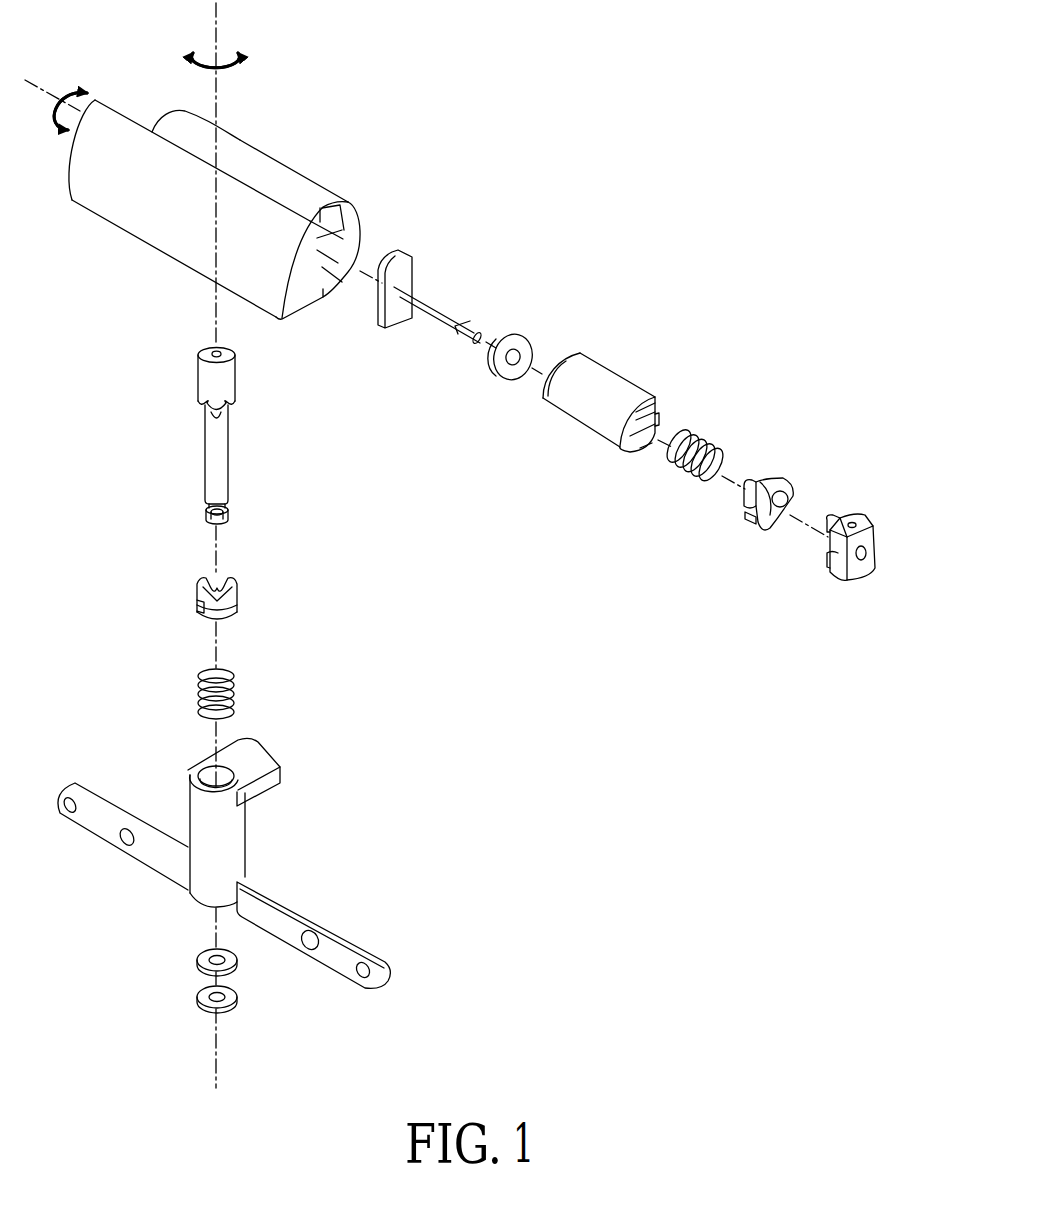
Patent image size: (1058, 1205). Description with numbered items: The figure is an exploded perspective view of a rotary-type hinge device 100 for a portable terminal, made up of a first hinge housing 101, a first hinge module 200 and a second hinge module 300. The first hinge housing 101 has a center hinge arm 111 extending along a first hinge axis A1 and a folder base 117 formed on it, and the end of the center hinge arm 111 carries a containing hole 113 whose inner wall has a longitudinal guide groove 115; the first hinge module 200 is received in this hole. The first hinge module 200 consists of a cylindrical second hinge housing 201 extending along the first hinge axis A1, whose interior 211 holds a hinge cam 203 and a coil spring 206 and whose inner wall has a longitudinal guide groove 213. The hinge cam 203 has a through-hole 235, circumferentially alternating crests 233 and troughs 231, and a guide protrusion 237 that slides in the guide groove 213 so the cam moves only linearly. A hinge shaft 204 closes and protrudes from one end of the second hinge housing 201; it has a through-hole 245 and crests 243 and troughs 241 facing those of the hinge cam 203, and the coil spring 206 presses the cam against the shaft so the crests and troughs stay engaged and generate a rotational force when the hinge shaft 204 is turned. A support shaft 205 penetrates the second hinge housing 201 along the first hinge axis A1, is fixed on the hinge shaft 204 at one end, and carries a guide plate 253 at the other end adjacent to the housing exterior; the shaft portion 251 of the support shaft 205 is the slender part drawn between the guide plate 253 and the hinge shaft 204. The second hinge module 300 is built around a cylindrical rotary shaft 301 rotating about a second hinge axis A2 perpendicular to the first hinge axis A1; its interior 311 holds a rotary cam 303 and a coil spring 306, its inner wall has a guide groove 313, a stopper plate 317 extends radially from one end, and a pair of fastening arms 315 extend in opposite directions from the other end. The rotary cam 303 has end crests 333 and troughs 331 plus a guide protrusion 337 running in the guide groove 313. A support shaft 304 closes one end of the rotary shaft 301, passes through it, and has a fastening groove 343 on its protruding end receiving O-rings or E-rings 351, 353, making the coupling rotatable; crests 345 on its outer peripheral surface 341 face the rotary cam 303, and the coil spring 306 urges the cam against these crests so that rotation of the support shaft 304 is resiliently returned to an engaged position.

The rotary-type hinge device 100 is at (598, 68).
The first hinge housing 101 is at (253, 205).
The center hinge arm 111 is at (302, 186).
The containing hole 113 is at (343, 210).
The guide groove 115 is at (345, 233).
The folder base 117 is at (150, 234).
The first hinge module 200 is at (652, 320).
The second hinge housing 201 is at (622, 439).
The interior 211 is at (632, 448).
The guide groove 213 is at (660, 413).
The support shaft 205 is at (446, 304).
The shaft portion 251 is at (450, 316).
The guide plate 253 is at (412, 268).
The coil spring 206 is at (680, 468).
The hinge cam 203 is at (757, 506).
The troughs 231 is at (769, 480).
The crests 233 is at (787, 487).
The through-hole 235 is at (792, 503).
The guide protrusion 237 is at (772, 532).
The hinge shaft 204 is at (846, 535).
The troughs 241 is at (823, 537).
The crests 243 is at (845, 518).
The through-hole 245 is at (864, 559).
The second hinge module 300 is at (352, 570).
The rotary shaft 301 is at (224, 880).
The interior 311 is at (208, 772).
The guide groove 313 is at (194, 782).
The fastening arms 315 is at (103, 826).
The stopper plate 317 is at (266, 757).
The rotary cam 303 is at (214, 587).
The troughs 331 is at (215, 580).
The crests 333 is at (232, 580).
The guide protrusion 337 is at (198, 607).
The support shaft 304 is at (220, 437).
The outer peripheral surface 341 is at (222, 458).
The fastening groove 343 is at (227, 516).
The crests 345 is at (222, 432).
The coil spring 306 is at (247, 679).
The O-ring or E-ring 351 is at (200, 961).
The O-ring or E-ring 353 is at (200, 999).
The first hinge axis A1 is at (43, 93).
The second hinge axis A2 is at (220, 22).